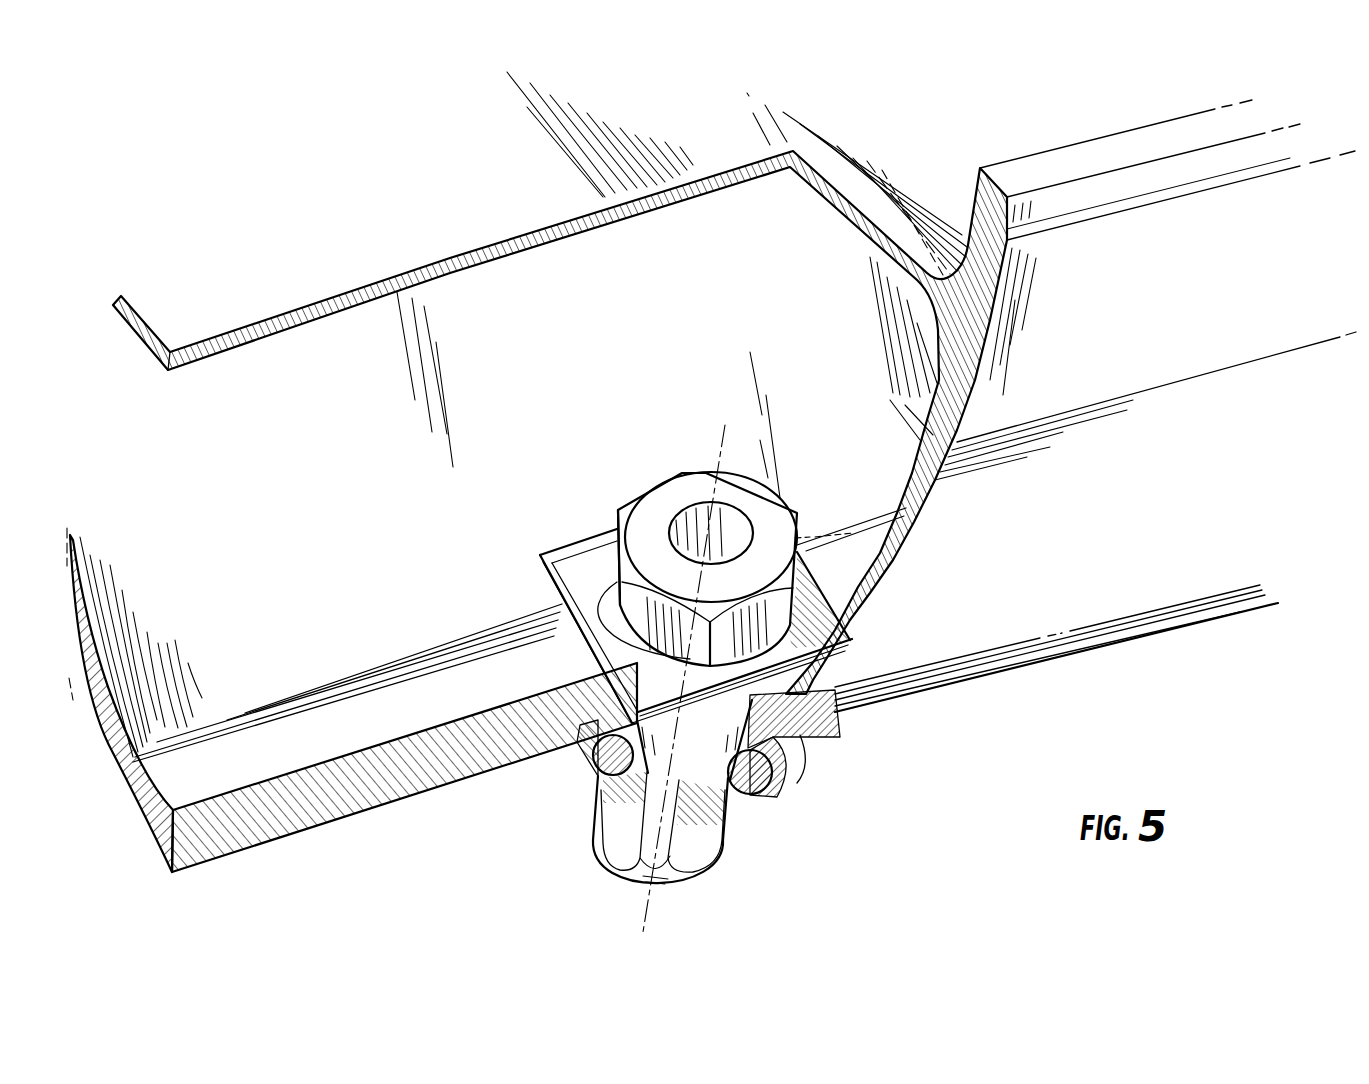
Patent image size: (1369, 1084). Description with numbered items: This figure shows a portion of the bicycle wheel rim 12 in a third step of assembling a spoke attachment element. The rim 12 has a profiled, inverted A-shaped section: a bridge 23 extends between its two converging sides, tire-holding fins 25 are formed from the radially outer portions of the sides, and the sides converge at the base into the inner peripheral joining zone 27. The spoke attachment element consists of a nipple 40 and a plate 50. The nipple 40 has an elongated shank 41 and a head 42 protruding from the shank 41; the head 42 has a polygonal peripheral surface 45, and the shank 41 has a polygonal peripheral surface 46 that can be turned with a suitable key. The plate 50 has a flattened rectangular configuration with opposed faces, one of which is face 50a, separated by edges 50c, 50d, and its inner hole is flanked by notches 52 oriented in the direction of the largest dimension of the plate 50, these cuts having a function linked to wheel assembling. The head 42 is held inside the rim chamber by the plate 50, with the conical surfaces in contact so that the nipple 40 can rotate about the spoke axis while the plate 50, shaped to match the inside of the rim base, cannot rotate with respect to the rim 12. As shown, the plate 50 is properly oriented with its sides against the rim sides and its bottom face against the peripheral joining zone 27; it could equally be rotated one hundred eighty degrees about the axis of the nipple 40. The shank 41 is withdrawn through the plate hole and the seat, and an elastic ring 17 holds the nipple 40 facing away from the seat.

The rim 12 is at (447, 783).
The elastic ring 17 is at (797, 763).
The bridge 23 is at (862, 183).
The tire-holding fins 25 is at (1010, 172).
The inner peripheral joining zone 27 is at (907, 703).
The nipple 40 is at (646, 678).
The shank 41 is at (695, 767).
The head 42 is at (678, 519).
The polygonal peripheral surface 45 is at (618, 531).
The polygonal peripheral surface 46 is at (695, 837).
The plate 50 is at (635, 653).
The face 50a is at (537, 548).
The edge 50c is at (815, 707).
The edge 50d is at (535, 610).
The notches 52 is at (565, 570).